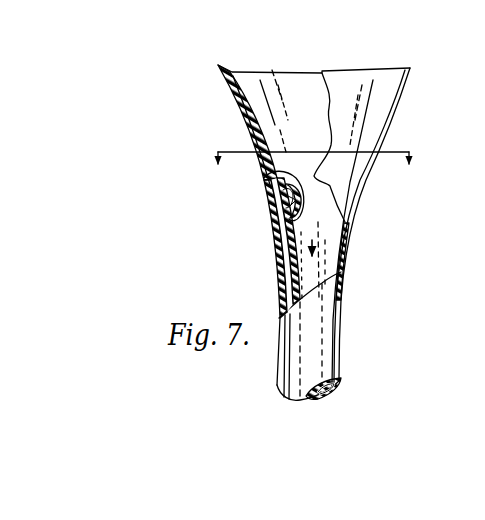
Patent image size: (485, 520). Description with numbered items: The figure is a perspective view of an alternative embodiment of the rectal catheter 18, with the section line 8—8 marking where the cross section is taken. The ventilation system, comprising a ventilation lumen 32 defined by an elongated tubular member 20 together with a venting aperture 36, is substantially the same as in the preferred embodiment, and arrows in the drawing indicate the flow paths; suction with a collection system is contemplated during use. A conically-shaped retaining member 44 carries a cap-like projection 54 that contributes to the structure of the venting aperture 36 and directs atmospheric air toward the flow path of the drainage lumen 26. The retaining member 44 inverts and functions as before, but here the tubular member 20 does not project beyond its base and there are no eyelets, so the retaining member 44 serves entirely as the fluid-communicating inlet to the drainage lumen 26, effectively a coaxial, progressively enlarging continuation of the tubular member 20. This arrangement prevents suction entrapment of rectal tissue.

The rectal catheter 18 is at (287, 231).
The conically-shaped retaining member 44 is at (382, 96).
The cap-like projection 54 is at (264, 178).
The venting aperture 36 is at (281, 236).
The ventilation lumen 32 is at (278, 257).
The drainage lumen 26 is at (333, 243).
The elongated tubular member 20 is at (331, 346).
The line 8- 8 is at (314, 176).